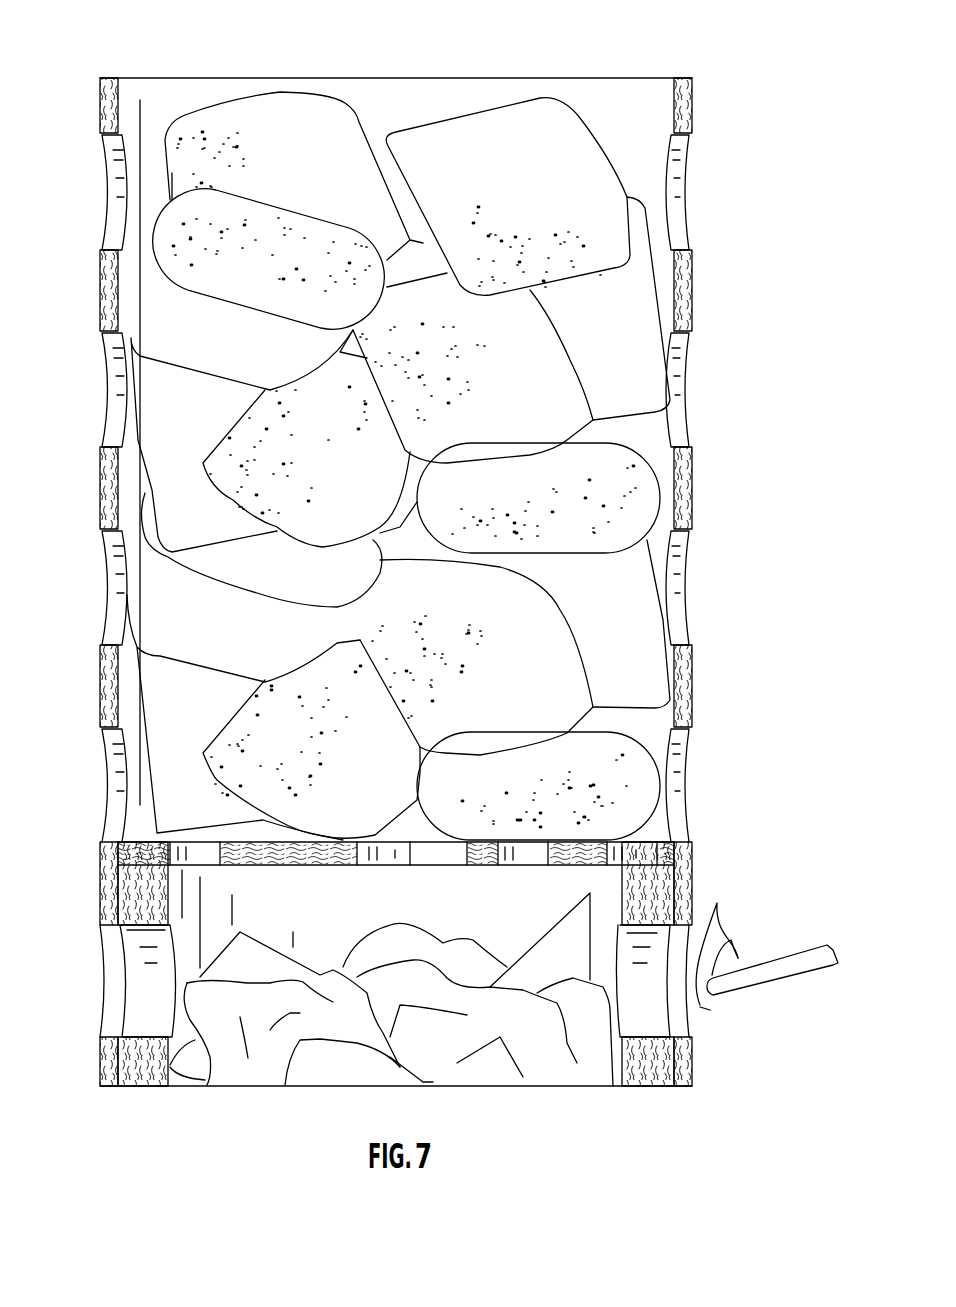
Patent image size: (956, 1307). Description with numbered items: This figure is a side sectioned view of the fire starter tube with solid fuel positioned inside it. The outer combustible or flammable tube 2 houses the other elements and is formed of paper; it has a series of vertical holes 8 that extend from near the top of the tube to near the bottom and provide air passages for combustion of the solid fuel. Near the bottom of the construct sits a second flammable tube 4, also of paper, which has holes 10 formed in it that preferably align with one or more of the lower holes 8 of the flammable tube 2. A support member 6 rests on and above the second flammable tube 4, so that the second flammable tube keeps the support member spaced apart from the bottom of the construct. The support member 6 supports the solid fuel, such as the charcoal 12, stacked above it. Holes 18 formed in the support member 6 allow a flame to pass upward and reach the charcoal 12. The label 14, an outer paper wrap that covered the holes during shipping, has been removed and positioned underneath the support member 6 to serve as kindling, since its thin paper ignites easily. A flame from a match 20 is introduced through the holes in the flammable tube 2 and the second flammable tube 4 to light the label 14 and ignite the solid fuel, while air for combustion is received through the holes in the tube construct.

The flammable tube 2 is at (693, 478).
The second flammable tube 4 is at (640, 870).
The support member 6 is at (287, 867).
The vertical holes 8 is at (117, 397).
The holes 10 is at (148, 1001).
The charcoal 12 is at (477, 157).
The label 14 is at (543, 1053).
The holes 18 is at (412, 855).
The match 20 is at (775, 970).